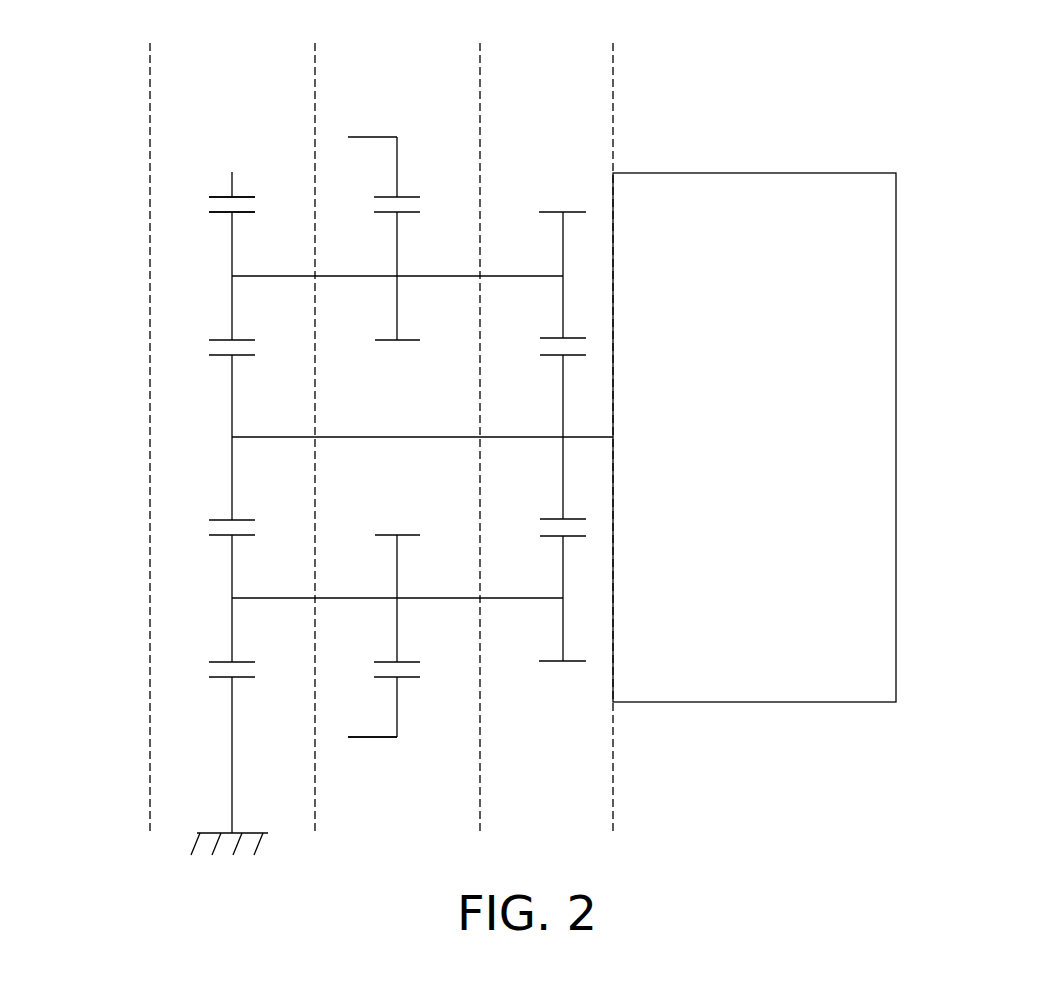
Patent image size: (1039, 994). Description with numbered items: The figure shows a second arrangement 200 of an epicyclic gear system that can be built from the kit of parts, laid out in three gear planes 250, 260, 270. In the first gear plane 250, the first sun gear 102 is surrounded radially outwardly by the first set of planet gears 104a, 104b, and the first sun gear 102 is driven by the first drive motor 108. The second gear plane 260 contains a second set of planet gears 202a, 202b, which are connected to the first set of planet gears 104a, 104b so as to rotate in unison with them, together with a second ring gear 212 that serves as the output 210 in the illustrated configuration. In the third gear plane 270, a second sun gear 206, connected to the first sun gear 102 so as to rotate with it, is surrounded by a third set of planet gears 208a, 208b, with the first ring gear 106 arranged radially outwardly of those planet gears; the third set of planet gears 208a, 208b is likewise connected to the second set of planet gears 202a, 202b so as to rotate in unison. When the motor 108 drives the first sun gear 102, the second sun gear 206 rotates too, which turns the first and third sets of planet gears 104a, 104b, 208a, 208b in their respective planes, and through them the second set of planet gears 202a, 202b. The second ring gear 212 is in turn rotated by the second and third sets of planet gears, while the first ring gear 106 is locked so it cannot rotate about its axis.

The second arrangement 200 is at (908, 136).
The first drive motor 108 is at (896, 437).
The first ring gear 106 is at (225, 197).
The first set of planet gears 104a is at (573, 212).
The first set of planet gears 104b is at (555, 663).
The first sun gear 102 is at (563, 394).
The second sun gear 206 is at (232, 403).
The third set of planet gears 208a is at (232, 247).
The third set of planet gears 208b is at (232, 573).
The second set of planet gears 202a is at (397, 307).
The second set of planet gears 202b is at (397, 570).
The second ring gear 212 is at (373, 137).
The output 210 is at (398, 750).
The third gear plane 270 is at (232, 437).
The second gear plane 260 is at (428, 437).
The first gear plane 250 is at (570, 437).